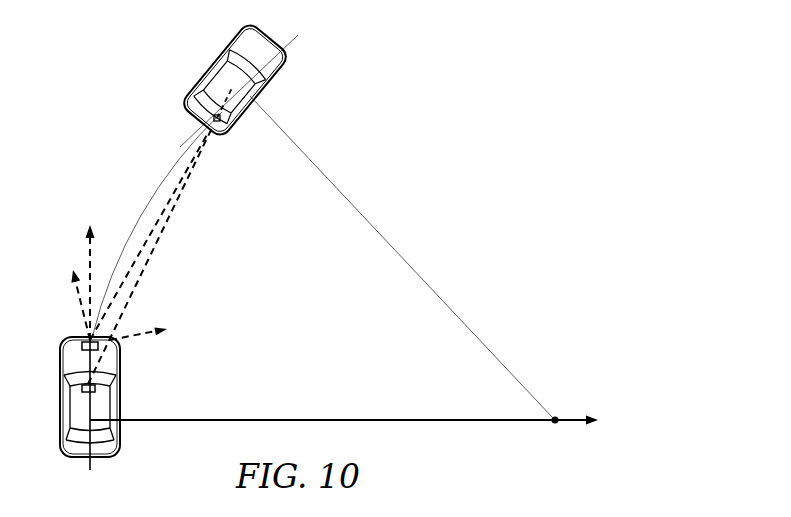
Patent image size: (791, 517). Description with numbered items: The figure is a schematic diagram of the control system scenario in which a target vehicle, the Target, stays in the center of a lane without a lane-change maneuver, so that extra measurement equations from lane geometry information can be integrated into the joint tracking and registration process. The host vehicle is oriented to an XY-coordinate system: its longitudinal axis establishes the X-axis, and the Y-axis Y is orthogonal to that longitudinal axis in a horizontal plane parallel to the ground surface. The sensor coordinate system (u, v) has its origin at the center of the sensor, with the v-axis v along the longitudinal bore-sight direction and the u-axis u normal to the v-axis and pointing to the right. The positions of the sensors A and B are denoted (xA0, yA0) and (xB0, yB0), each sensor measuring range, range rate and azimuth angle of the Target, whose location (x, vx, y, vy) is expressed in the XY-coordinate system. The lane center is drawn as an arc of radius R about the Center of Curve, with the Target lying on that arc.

The sensor A is at (78, 332).
The sensor B is at (78, 347).
The u-axis u is at (74, 293).
The v-axis v is at (147, 327).
The element R is at (401, 257).
The Y-axis Y is at (344, 409).
The target Target is at (263, 80).
The center of curve Center of Curve is at (559, 444).